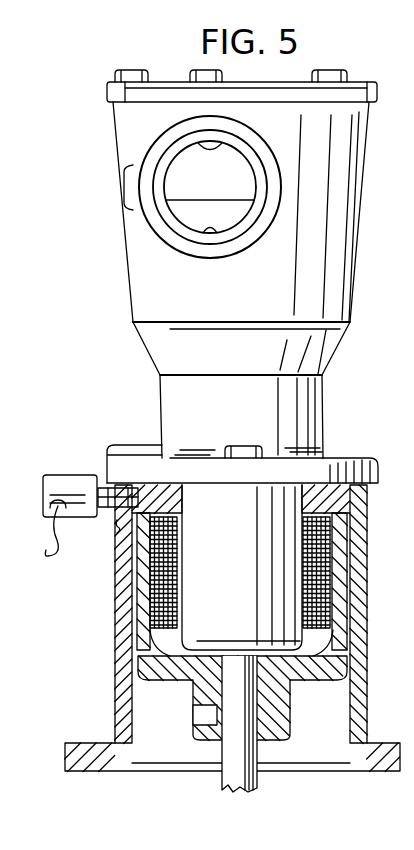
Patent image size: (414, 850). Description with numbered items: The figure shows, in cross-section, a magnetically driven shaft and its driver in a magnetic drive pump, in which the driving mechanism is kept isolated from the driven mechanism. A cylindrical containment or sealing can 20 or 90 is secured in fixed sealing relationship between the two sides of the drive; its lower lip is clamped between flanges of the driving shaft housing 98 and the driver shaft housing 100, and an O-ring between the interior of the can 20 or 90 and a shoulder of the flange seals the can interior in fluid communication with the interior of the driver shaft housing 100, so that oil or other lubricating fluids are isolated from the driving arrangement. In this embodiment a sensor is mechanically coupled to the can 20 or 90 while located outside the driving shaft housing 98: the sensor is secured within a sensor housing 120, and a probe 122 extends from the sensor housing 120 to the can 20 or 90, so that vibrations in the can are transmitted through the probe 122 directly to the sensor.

The driver shaft housing 100 is at (161, 398).
The driving shaft housing 98 is at (118, 626).
The sensor housing 120 is at (73, 518).
The probe 122 is at (117, 524).
The containment can 20 is at (242, 567).
The containment can 90 is at (226, 624).